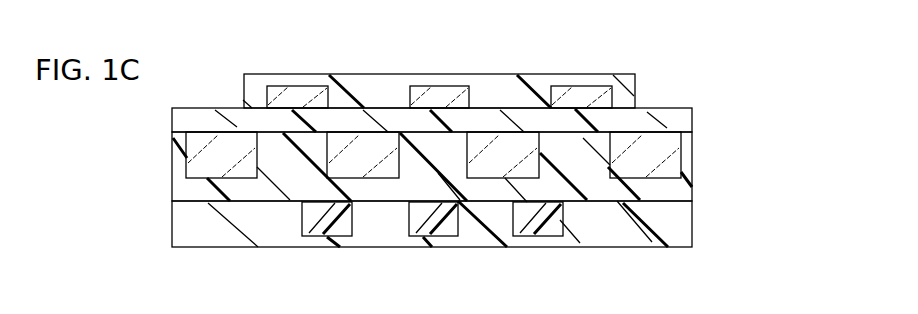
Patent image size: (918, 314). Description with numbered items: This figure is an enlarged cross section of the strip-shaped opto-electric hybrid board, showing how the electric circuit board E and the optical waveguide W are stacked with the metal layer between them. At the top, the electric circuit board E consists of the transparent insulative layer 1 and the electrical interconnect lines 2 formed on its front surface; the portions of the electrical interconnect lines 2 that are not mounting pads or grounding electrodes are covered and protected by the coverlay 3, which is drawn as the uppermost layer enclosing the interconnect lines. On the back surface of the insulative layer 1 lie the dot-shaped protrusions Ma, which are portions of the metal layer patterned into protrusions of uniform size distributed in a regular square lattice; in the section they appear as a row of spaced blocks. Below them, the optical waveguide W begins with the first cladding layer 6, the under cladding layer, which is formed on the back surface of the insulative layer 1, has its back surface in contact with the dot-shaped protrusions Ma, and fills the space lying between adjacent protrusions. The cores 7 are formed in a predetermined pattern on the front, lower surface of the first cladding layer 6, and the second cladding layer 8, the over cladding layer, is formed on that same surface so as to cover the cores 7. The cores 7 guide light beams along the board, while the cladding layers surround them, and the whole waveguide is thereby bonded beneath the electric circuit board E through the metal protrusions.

The insulative layer 1 is at (667, 127).
The electrical interconnect lines 2 is at (303, 95).
The coverlay 3 is at (376, 87).
The first cladding layer 6 is at (405, 180).
The cores 7 is at (315, 222).
The second cladding layer 8 is at (479, 238).
The dot-shaped protrusions Ma is at (503, 167).
The electric circuit board E is at (712, 75).
The optical waveguide W is at (712, 180).